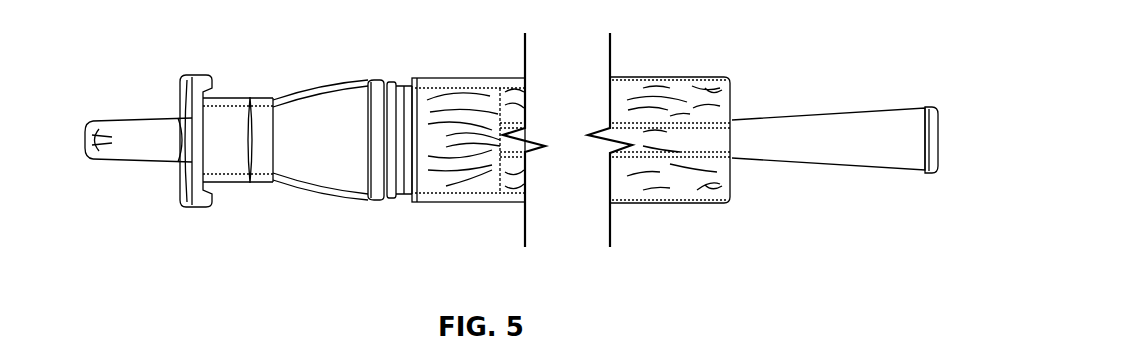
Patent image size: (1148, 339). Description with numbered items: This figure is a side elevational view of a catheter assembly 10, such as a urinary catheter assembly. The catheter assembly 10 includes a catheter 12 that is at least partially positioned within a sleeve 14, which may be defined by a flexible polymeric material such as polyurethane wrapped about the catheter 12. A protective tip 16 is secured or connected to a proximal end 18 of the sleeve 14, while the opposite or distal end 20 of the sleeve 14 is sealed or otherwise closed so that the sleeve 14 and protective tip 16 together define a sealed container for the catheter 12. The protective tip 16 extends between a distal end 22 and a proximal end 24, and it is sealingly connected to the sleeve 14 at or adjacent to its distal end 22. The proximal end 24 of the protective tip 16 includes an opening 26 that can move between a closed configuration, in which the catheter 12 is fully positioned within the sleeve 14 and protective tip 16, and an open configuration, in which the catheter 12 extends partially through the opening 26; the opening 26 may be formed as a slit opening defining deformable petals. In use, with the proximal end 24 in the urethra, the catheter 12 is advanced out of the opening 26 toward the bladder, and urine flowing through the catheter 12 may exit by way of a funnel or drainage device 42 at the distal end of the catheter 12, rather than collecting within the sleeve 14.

The catheter assembly 10 is at (604, 276).
The catheter 12 is at (663, 123).
The sleeve 14 is at (622, 88).
The protective tip 16 is at (308, 90).
The proximal end of the sleeve 18 is at (433, 204).
The distal end of the sleeve 20 is at (710, 205).
The distal end of the protective tip 22 is at (437, 98).
The proximal end of the protective tip 24 is at (132, 118).
The opening 26 is at (97, 163).
The funnel or drainage device 42 is at (845, 117).